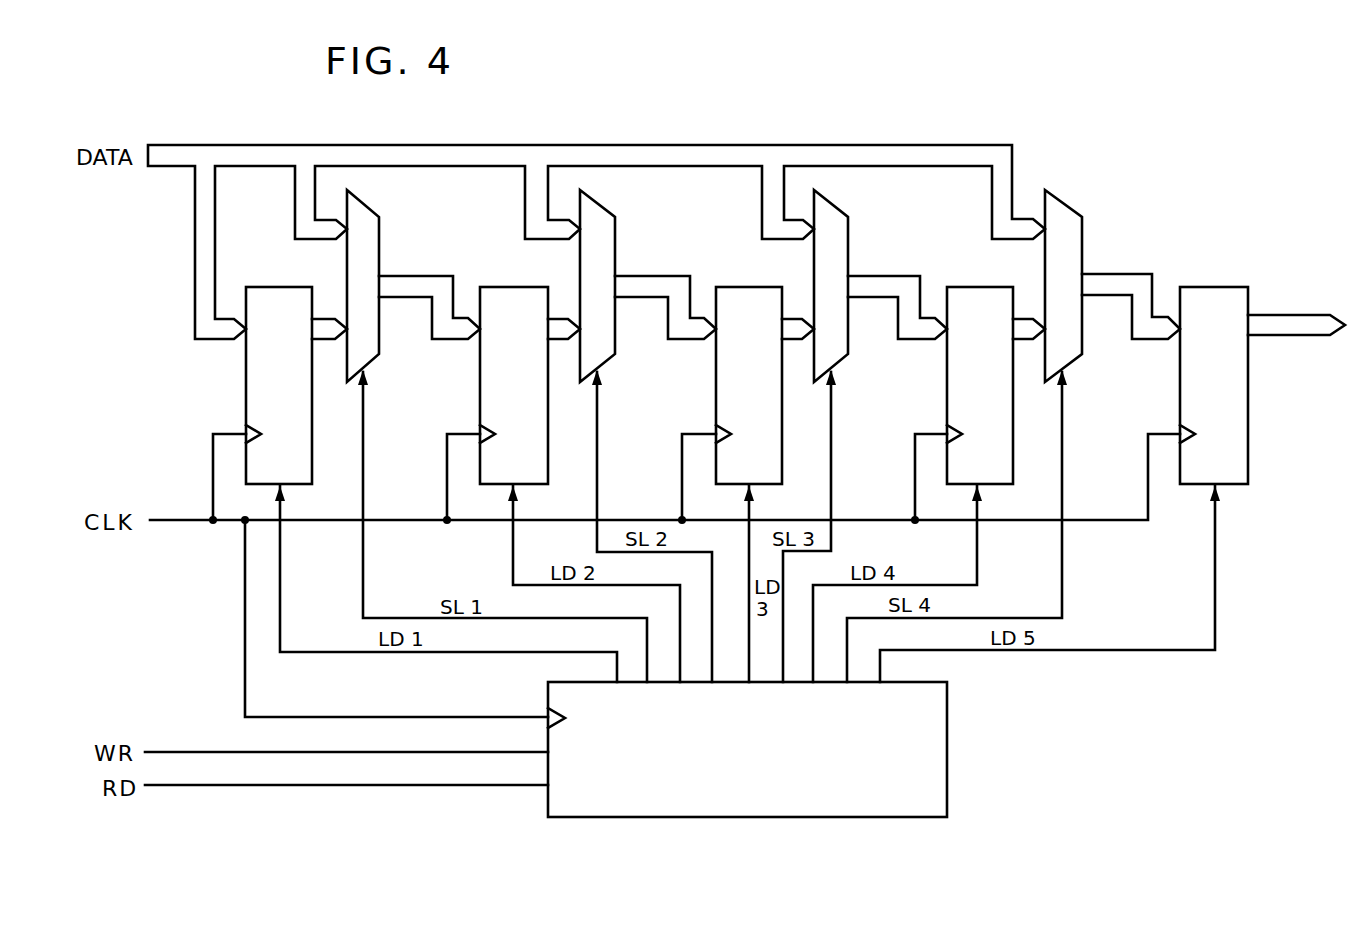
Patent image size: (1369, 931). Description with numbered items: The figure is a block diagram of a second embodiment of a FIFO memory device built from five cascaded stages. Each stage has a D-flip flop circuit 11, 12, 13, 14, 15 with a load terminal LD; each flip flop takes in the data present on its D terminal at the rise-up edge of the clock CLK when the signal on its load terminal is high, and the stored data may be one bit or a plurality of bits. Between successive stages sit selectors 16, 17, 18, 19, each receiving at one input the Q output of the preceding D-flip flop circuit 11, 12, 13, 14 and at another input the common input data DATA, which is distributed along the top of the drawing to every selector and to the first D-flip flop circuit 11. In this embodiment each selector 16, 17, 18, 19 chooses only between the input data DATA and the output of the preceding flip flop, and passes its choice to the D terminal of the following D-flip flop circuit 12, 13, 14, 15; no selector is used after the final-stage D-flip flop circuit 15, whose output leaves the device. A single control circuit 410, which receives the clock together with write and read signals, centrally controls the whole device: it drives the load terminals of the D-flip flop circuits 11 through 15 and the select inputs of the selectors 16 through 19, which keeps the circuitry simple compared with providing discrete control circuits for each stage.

The D-flip flop circuit 11 is at (268, 287).
The D-flip flop circuit 12 is at (505, 269).
The D-flip flop circuit 13 is at (738, 287).
The D-flip flop circuit 14 is at (971, 269).
The D-flip flop circuit 15 is at (1210, 287).
The selector 16 is at (375, 213).
The selector 17 is at (609, 213).
The selector 18 is at (842, 213).
The selector 19 is at (1076, 212).
The control circuit 410 is at (947, 710).